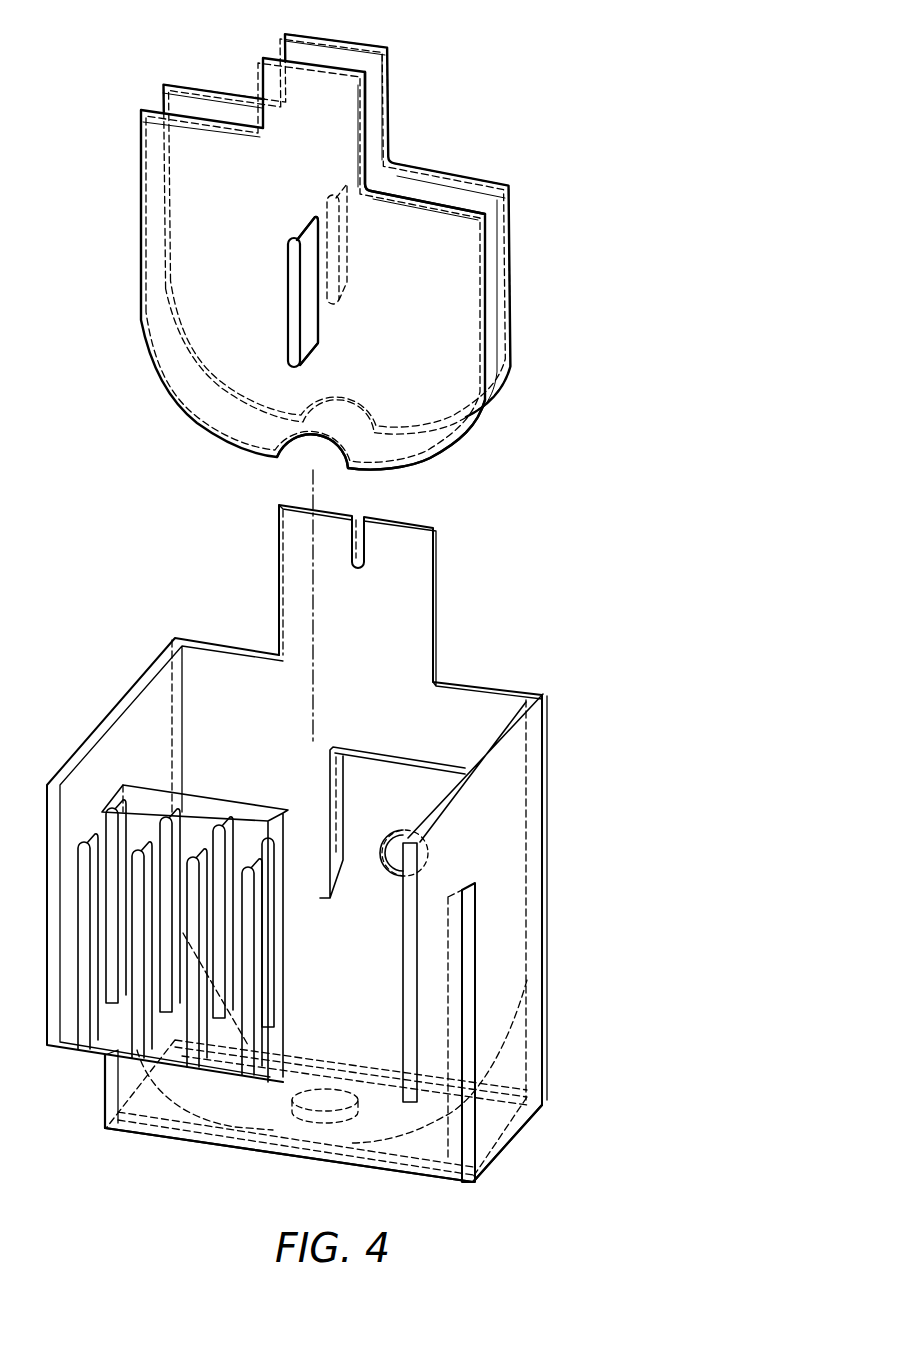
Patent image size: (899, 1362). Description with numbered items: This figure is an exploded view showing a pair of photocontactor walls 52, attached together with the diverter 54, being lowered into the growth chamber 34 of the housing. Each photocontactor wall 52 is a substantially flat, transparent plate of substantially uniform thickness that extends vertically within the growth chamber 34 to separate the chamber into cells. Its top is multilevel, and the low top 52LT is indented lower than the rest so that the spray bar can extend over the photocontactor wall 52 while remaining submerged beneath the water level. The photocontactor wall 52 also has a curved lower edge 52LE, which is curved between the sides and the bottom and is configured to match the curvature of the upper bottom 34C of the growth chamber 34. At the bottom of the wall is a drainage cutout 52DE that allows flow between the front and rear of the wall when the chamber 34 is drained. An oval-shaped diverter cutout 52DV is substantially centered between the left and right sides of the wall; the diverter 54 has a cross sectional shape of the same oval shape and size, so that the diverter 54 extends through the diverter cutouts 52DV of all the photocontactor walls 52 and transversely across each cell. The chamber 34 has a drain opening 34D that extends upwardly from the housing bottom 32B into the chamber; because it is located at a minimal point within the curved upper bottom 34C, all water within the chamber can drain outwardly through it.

The photocontactor wall 52 is at (483, 180).
The low top 52LT is at (415, 176).
The diverter cutout 52DV is at (340, 318).
The drainage cutout 52DE is at (282, 462).
The curved lower edge 52LE is at (443, 453).
The diverter 54 is at (330, 196).
The growth chamber 34 is at (470, 700).
The upper bottom 34C is at (158, 1137).
The drain opening 34D is at (282, 1157).
The housing bottom 32B is at (425, 1182).